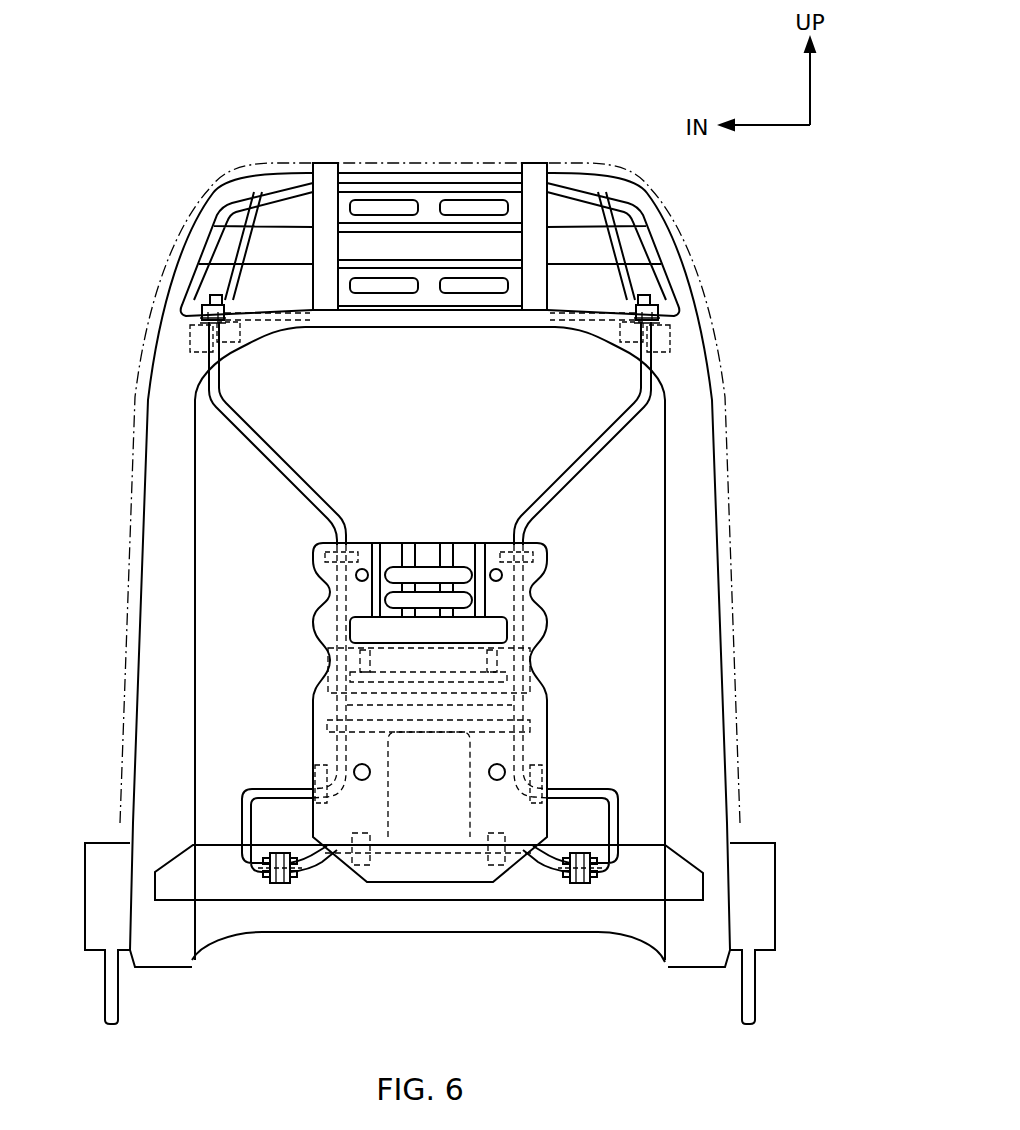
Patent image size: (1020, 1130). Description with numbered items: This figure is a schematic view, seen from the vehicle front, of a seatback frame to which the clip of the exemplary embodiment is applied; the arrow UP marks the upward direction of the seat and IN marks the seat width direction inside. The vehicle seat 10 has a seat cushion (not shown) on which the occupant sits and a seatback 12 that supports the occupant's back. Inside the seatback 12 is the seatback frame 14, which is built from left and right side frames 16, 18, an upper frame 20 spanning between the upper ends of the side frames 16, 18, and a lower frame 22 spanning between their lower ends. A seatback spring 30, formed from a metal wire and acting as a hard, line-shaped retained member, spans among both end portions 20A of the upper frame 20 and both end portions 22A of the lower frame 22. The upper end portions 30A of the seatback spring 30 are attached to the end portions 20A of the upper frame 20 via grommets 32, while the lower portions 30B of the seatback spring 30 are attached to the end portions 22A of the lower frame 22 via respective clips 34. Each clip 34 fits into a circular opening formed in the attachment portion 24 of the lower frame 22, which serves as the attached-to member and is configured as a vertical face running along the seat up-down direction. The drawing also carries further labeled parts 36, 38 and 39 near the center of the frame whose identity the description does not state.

The vehicle seat 10 is at (745, 287).
The seatback 12 is at (727, 512).
The seatback frame 14 is at (713, 423).
The side frame 16 is at (663, 631).
The side frame 18 is at (198, 620).
The upper frame 20 is at (454, 326).
The end portion of upper frame 20A is at (240, 303).
The lower frame 22 is at (646, 856).
The end portion of lower frame 22A is at (215, 843).
The attachment portion 24 is at (250, 880).
The seatback spring 30 is at (298, 466).
The upper end portion of seatback spring 30A is at (208, 303).
The lower portion of seatback spring 30B is at (302, 883).
The grommet 32 is at (192, 296).
The clip 34 is at (278, 886).
The clip 36 is at (318, 556).
The lower fastening portion 38 is at (497, 865).
The center bracket 39 is at (450, 541).